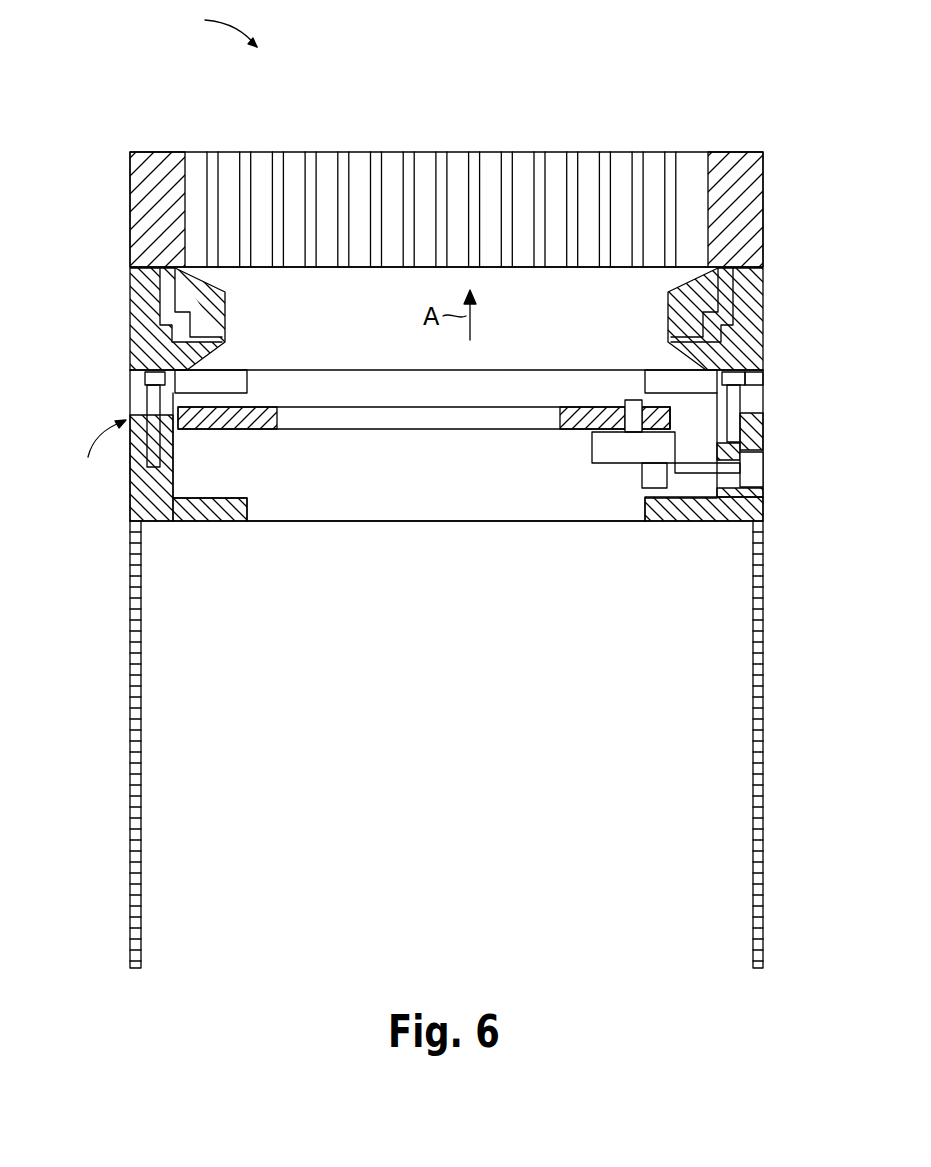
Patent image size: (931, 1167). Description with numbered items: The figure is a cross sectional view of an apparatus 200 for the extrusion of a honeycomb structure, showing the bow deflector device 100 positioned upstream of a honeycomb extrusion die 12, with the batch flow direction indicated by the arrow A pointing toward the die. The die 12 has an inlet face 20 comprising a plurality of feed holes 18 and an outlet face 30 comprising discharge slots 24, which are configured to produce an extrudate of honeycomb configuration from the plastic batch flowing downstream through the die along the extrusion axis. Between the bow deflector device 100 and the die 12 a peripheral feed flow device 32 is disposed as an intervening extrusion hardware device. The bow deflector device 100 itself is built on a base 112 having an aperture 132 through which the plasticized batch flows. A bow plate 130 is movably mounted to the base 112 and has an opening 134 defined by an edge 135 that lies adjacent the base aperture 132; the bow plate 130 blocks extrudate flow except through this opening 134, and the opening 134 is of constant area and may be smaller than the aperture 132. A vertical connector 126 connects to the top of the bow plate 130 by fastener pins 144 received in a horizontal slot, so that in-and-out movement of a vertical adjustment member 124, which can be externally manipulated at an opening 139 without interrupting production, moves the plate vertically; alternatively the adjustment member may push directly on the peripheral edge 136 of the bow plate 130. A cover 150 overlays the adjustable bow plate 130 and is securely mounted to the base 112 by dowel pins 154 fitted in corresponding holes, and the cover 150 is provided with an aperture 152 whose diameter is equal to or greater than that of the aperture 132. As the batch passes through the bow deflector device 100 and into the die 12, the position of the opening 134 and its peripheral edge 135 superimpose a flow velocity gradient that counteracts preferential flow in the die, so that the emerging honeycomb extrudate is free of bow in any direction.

The apparatus 200 is at (216, 28).
The honeycomb extrusion die 12 is at (133, 204).
The discharge slots 24 is at (313, 152).
The outlet face 30 is at (594, 152).
The feed holes 18 is at (313, 268).
The inlet face 20 is at (560, 268).
The peripheral feed flow device 32 is at (140, 318).
The aperture 152 is at (504, 374).
The cover 150 is at (213, 378).
The dowel pins 154 is at (150, 378).
The base 112 is at (133, 507).
The opening 139 is at (750, 478).
The vertical adjustment member 124 is at (733, 468).
The bow deflector device 100 is at (105, 481).
The opening 134 is at (402, 415).
The bow plate 130 is at (268, 429).
The edge 135 is at (552, 429).
The peripheral edge 136 is at (672, 425).
The fastener pins 144 is at (633, 400).
The vertical connector 126 is at (607, 450).
The aperture 132 is at (418, 495).